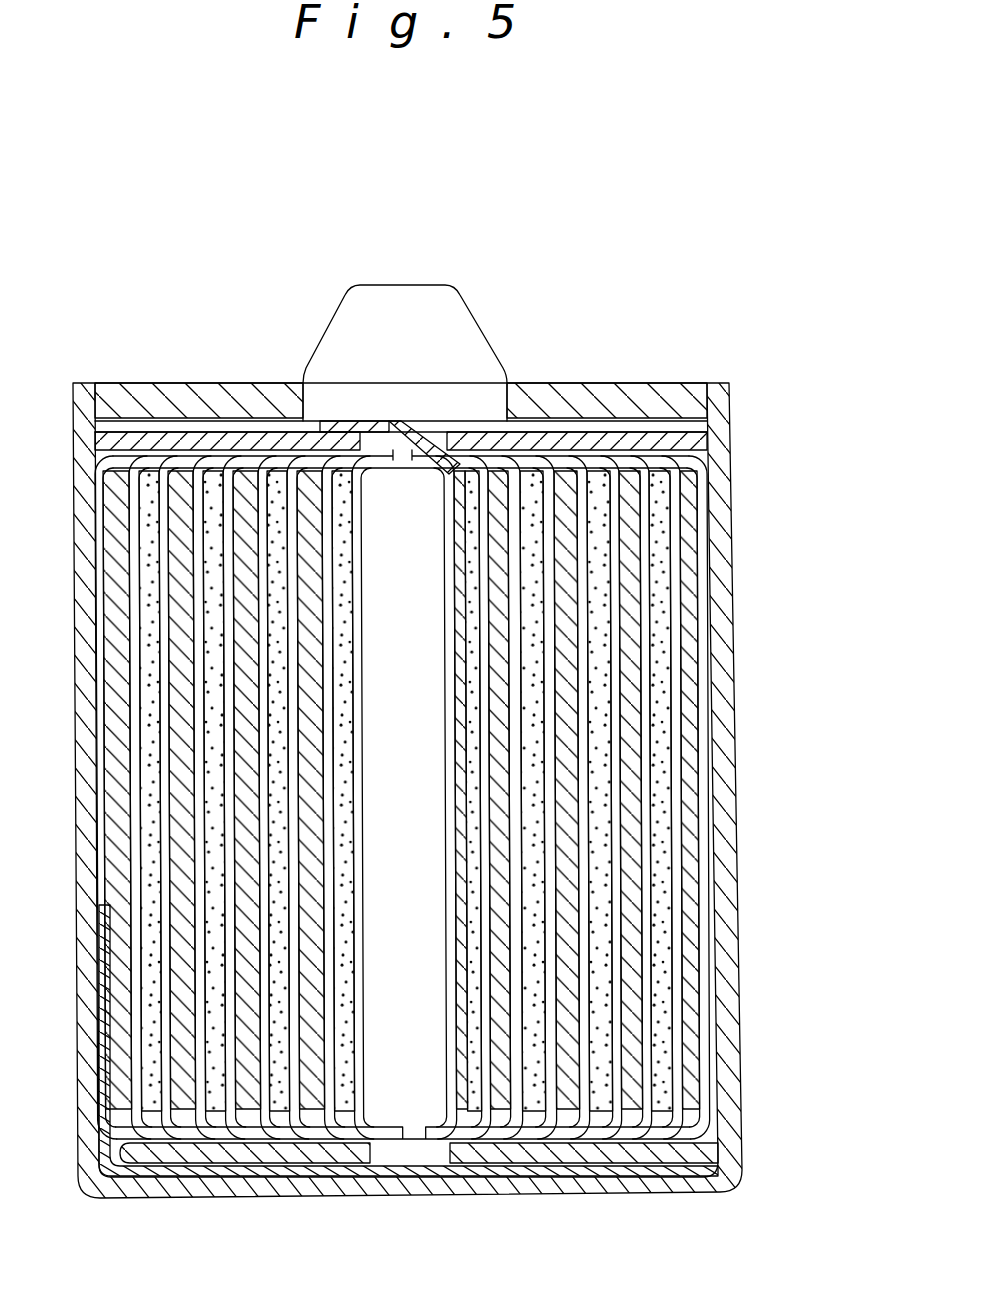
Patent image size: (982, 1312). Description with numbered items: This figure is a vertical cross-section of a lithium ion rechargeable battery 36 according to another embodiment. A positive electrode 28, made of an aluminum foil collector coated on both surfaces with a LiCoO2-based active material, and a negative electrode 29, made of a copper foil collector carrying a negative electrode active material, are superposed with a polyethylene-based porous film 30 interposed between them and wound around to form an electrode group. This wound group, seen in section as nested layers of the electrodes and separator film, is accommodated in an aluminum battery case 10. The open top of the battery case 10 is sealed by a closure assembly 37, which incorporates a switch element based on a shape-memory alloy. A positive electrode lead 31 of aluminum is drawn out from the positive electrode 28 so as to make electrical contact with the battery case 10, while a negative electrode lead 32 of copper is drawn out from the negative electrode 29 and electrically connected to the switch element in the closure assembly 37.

The battery case 10 is at (730, 915).
The positive electrode 28 is at (693, 813).
The negative electrode 29 is at (657, 601).
The polyethylene-based porous film 30 is at (673, 693).
The positive electrode lead 31 is at (246, 1168).
The negative electrode lead 32 is at (443, 427).
The battery 36 is at (574, 276).
The closure assembly 37 is at (467, 290).